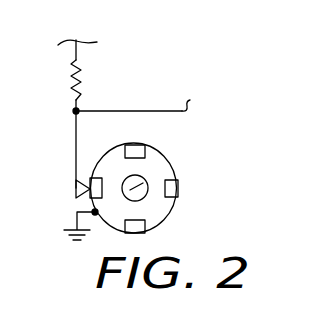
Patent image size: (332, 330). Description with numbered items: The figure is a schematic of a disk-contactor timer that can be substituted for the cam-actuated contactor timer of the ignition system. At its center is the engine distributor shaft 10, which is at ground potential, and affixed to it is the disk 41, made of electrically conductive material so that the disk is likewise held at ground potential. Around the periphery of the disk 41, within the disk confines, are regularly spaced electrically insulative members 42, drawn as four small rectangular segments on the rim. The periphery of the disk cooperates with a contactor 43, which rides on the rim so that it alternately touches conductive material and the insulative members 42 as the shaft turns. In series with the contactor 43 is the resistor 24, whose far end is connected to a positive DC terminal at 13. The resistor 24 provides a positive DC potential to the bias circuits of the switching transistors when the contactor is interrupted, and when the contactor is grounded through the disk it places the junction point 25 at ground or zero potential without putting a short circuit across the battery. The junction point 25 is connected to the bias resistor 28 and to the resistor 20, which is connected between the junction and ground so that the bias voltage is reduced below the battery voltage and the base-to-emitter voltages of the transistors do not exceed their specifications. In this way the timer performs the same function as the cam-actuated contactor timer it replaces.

The engine distributor shaft 10 is at (148, 180).
The positive DC terminal 13 is at (79, 29).
The resistor 20 is at (186, 105).
The resistor 24 is at (82, 76).
The junction point 25 is at (75, 112).
The bias resistor 28 is at (189, 114).
The disk 41 is at (162, 207).
The electrically insulative members 42 is at (92, 180).
The contactor 43 is at (76, 152).